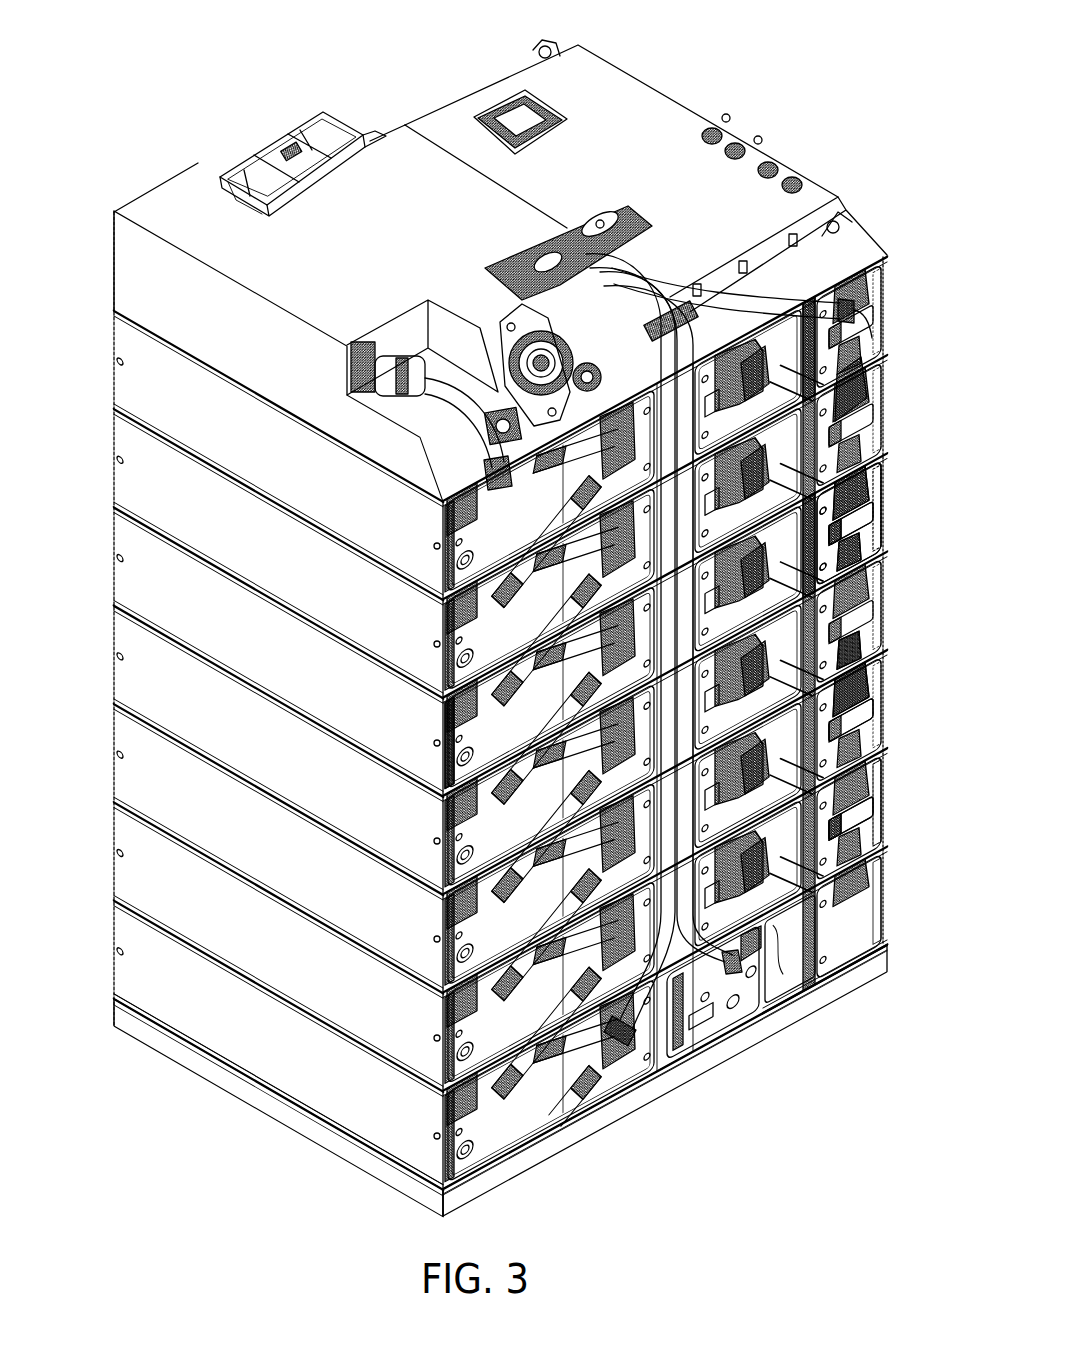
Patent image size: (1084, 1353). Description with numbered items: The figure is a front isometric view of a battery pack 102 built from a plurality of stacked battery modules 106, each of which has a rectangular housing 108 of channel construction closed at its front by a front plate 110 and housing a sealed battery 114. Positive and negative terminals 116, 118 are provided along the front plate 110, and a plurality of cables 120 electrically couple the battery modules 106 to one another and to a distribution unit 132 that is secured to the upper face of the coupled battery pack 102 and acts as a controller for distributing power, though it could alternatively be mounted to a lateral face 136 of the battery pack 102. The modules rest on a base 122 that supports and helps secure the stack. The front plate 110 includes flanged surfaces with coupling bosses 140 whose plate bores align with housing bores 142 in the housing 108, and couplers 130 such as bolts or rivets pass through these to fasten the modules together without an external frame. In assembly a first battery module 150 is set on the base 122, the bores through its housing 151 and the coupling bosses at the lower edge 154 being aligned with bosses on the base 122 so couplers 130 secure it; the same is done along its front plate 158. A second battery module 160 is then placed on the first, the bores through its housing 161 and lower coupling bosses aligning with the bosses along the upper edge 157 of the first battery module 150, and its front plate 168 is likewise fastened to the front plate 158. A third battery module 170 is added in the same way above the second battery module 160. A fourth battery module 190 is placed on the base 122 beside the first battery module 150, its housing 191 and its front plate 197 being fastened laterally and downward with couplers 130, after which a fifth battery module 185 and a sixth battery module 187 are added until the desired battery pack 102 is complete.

The battery pack 102 is at (758, 88).
The distribution unit 132 is at (140, 272).
The housing 108 is at (160, 411).
The battery module 106 is at (135, 481).
The lateral face 136 is at (141, 599).
The battery 114 is at (140, 685).
The sixth battery module 187 is at (131, 791).
The fifth battery module 185 is at (131, 887).
The housing 191 is at (277, 1074).
The base 122 is at (295, 1122).
The fourth battery module 190 is at (387, 1130).
The coupling bosses 140 is at (443, 572).
The housing bores 142 is at (433, 641).
The negative terminal 118 is at (452, 717).
The cables 120 is at (797, 377).
The couplers 130 is at (877, 340).
The front plate 110 is at (780, 547).
The positive terminal 116 is at (887, 581).
The third battery module 170 is at (870, 690).
The second battery module 160 is at (865, 770).
The front plate 168 is at (877, 785).
The housing 161 is at (887, 795).
The upper edge 157 is at (887, 863).
The housing 151 is at (890, 927).
The first battery module 150 is at (768, 975).
The front plate 158 is at (760, 937).
The lower edge 154 is at (707, 1047).
The front plate 197 is at (577, 1107).